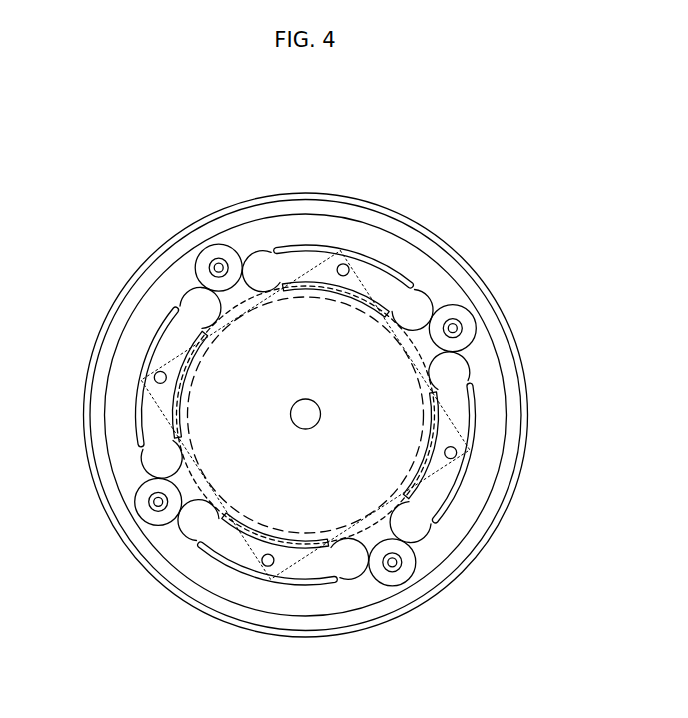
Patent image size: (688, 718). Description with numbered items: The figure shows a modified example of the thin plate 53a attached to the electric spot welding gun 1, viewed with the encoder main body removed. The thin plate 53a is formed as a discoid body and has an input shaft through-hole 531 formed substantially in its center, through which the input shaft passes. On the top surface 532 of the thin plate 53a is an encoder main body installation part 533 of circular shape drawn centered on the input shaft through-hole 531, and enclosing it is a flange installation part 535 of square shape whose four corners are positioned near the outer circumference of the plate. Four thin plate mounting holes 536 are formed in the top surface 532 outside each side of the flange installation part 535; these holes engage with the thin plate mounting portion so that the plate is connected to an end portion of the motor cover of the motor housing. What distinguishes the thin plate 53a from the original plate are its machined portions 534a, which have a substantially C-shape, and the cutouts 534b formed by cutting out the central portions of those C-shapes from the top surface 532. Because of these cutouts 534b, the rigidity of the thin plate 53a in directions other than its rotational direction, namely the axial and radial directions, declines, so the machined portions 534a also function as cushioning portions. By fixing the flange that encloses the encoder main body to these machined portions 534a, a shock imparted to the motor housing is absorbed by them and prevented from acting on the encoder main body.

The electric spot welding gun 1 is at (503, 219).
The thin plate 53a is at (420, 260).
The input shaft through-hole 531 is at (305, 429).
The top surface 532 is at (432, 550).
The encoder main body installation part 533 is at (425, 470).
The machined portions 534a is at (287, 262).
The cutouts 534b is at (377, 260).
The flange installation part 535 is at (442, 420).
The thin plate mounting holes 536 is at (227, 252).